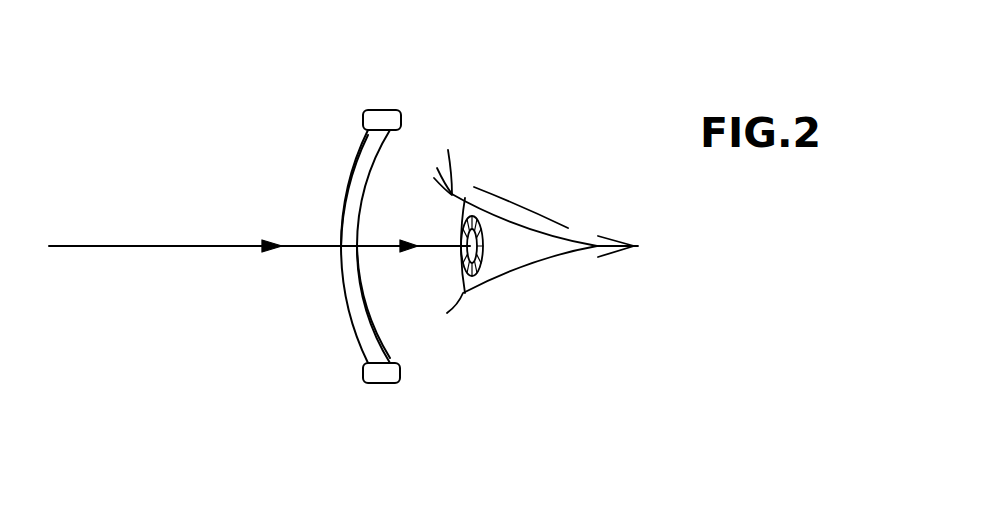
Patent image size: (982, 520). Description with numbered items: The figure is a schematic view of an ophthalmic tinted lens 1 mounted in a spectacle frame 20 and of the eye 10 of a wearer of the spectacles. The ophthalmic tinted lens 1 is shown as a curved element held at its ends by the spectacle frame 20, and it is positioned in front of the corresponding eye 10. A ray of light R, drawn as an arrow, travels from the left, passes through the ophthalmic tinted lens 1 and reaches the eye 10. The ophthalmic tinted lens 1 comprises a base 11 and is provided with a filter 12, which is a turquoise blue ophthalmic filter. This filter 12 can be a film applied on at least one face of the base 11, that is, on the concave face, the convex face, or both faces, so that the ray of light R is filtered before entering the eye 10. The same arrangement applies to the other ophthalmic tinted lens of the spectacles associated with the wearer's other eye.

The ophthalmic tinted lens 1 is at (349, 197).
The base 11 is at (356, 299).
The filter 12 is at (358, 158).
The spectacle frame 20 is at (381, 381).
The eye 10 is at (530, 263).
The ray of light R is at (148, 246).